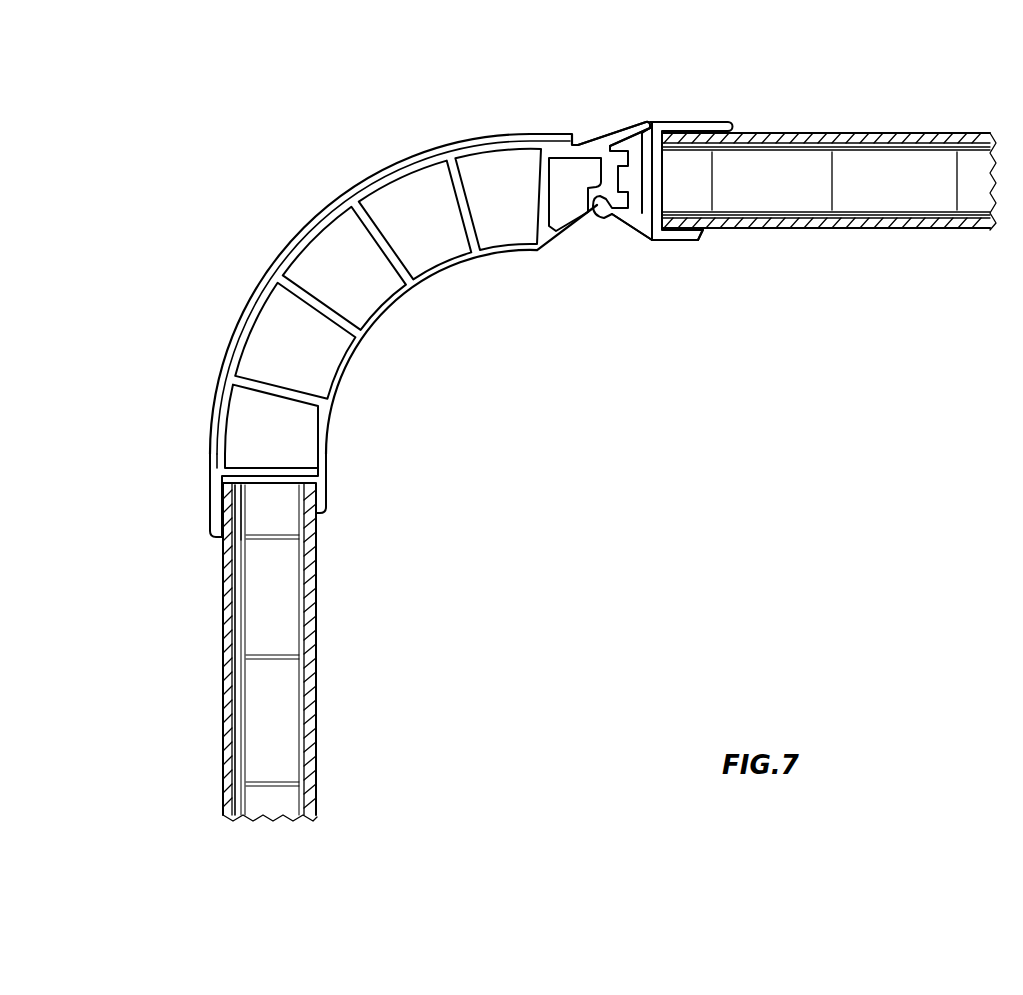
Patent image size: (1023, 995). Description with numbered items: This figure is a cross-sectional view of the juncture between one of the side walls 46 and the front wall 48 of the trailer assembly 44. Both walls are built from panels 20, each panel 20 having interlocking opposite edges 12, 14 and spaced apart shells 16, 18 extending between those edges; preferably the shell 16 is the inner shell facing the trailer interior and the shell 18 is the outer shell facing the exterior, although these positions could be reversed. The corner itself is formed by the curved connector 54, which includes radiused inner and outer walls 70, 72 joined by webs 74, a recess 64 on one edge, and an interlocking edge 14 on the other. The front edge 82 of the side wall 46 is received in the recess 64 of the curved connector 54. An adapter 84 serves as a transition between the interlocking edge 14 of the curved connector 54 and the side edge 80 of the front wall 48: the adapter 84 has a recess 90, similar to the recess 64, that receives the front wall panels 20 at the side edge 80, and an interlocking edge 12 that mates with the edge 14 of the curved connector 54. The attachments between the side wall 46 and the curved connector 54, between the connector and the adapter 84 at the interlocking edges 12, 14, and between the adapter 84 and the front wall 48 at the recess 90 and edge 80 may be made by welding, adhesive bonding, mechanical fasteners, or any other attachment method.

The interlocking edge 12 is at (601, 222).
The interlocking edge 14 is at (640, 183).
The inner shell 16 is at (826, 242).
The outer shell 18 is at (847, 129).
The panel 20 is at (946, 130).
The trailer assembly 44 is at (560, 420).
The side wall 46 is at (276, 652).
The front wall 48 is at (916, 243).
The curved connector 54 is at (438, 298).
The recess 64 is at (222, 513).
The inner wall 70 is at (392, 322).
The outer wall 72 is at (382, 172).
The webs 74 is at (494, 238).
The side edge 80 is at (655, 160).
The front edge 82 is at (255, 486).
The adapter 84 is at (601, 127).
The recess 90 is at (703, 213).